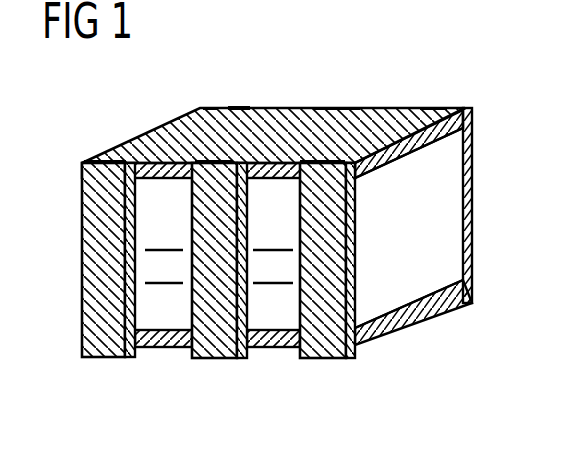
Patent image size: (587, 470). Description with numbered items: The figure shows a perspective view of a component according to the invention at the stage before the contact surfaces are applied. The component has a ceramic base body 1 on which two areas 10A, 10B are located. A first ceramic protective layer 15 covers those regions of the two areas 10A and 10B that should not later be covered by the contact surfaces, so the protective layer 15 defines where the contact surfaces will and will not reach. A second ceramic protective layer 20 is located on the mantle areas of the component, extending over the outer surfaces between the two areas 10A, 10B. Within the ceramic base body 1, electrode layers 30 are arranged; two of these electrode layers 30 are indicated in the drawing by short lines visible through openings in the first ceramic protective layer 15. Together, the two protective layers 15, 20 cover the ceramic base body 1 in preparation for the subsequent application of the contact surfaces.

The ceramic base body 1 is at (453, 219).
The first area 10A is at (90, 164).
The second area 10B is at (200, 110).
The first ceramic protective layer 15 is at (222, 110).
The second ceramic protective layer 20 is at (157, 147).
The electrode layers 30 is at (158, 250).